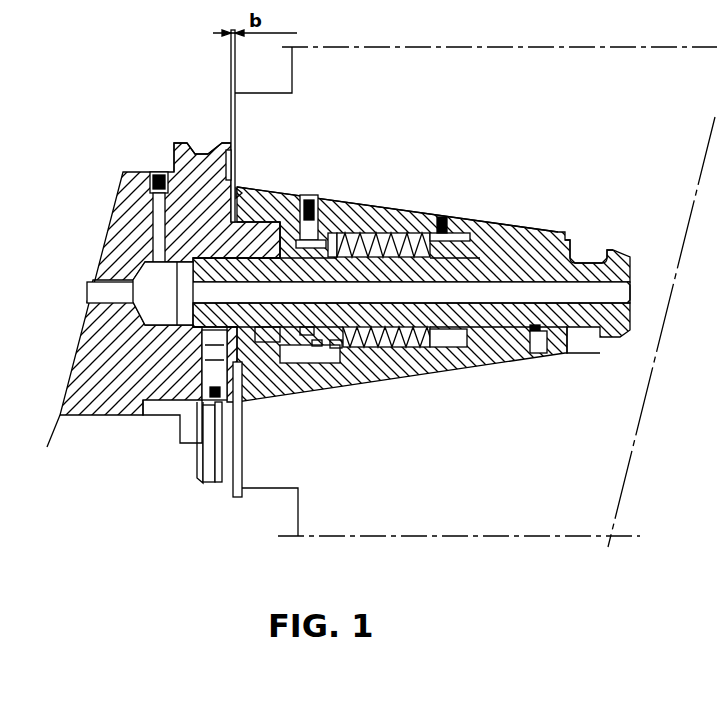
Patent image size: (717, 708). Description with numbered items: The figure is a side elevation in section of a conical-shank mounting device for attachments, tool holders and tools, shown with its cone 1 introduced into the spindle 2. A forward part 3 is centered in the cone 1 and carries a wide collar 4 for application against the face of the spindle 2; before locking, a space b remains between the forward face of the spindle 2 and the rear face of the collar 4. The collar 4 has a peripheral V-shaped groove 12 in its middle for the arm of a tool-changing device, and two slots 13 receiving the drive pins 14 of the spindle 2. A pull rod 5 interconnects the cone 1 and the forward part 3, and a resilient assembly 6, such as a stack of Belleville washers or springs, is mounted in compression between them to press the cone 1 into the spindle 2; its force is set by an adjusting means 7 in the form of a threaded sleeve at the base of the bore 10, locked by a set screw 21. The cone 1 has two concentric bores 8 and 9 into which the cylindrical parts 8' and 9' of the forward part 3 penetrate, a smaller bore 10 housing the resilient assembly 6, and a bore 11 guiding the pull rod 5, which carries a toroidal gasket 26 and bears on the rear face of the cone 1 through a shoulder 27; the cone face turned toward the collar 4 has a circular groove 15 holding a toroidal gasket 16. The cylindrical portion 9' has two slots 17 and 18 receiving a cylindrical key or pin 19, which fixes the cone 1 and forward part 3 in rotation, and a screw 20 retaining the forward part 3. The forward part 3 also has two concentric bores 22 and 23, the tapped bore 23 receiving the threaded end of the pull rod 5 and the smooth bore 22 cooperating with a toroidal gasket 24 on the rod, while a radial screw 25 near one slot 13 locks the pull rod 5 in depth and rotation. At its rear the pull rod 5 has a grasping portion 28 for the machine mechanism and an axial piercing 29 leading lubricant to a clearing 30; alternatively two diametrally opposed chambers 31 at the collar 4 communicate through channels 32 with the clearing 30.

The cone 1 is at (415, 213).
The spindle 2 is at (322, 507).
The forward part 3 is at (95, 387).
The collar 4 is at (178, 148).
The pull rod 5 is at (503, 315).
The resilient assembly 6 is at (375, 345).
The adjusting means 7 is at (450, 340).
The bore 8 is at (271, 204).
The cylindrical part 8' is at (269, 386).
The bore 9 is at (381, 206).
The cylindrical portion 9' is at (311, 379).
The bore 10 is at (382, 233).
The bore 11 is at (530, 333).
The peripheral V-shaped groove 12 is at (203, 150).
The slots 13 is at (192, 420).
The drive pins 14 is at (198, 473).
The circular groove 15 is at (240, 182).
The toroidal gasket 16 is at (230, 443).
The slot 17 is at (317, 346).
The slot 18 is at (325, 220).
The cylindrical key or pin 19 is at (300, 350).
The screw 20 is at (310, 197).
The set screw 21 is at (447, 222).
The bore 22 is at (335, 345).
The bore 23 is at (253, 330).
The toroidal gasket 24 is at (337, 233).
The radial screw 25 is at (210, 483).
The toroidal gasket 26 is at (543, 355).
The shoulder 27 is at (567, 355).
The grasping portion 28 is at (580, 250).
The axial piercing 29 is at (602, 288).
The clearing 30 is at (158, 303).
The chambers 31 is at (237, 132).
The channels 32 is at (158, 232).